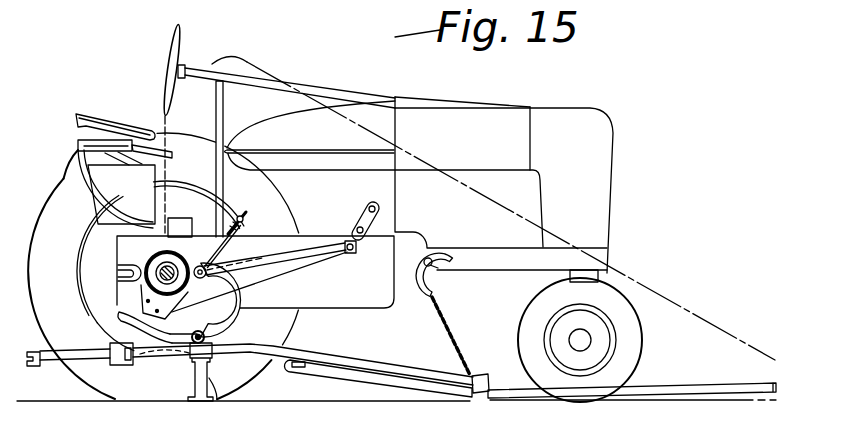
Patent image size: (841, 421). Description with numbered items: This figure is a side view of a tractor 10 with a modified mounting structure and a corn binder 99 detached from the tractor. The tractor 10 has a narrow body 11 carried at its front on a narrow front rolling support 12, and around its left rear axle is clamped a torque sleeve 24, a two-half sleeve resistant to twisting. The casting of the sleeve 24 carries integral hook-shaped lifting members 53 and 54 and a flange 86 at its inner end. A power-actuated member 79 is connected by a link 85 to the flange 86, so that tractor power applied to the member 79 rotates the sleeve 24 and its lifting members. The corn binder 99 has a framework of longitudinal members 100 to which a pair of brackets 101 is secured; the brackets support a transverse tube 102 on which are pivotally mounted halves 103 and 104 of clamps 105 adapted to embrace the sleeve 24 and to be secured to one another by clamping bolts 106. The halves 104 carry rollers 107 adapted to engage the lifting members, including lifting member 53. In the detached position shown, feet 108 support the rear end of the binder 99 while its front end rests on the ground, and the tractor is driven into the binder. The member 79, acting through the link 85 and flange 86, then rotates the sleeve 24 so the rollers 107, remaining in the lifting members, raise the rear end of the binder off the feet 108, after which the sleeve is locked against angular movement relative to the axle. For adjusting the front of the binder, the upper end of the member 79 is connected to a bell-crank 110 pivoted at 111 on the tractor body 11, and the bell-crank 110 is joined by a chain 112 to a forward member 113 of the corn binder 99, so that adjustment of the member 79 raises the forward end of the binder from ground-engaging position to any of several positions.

The tractor 10 is at (463, 101).
The tractor body 11 is at (490, 124).
The front rolling support 12 is at (646, 333).
The torque sleeve 24 is at (146, 256).
The lifting member 53 is at (199, 294).
The lifting member 54 is at (117, 273).
The power-actuated member 79 is at (366, 212).
The link 85 is at (317, 260).
The flange 86 is at (143, 293).
The corn binder 99 is at (623, 268).
The longitudinal members 100 is at (290, 346).
The brackets 101 is at (228, 338).
The transverse tube 102 is at (193, 333).
The clamp half 103 is at (132, 326).
The clamp half 104 is at (236, 323).
The clamp 105 is at (243, 299).
The clamping bolt 106 is at (244, 221).
The roller 107 is at (249, 260).
The foot 108 is at (197, 384).
The bell-crank 110 is at (440, 250).
The pivot 111 is at (436, 277).
The chain 112 is at (450, 338).
The forward member 113 is at (657, 385).